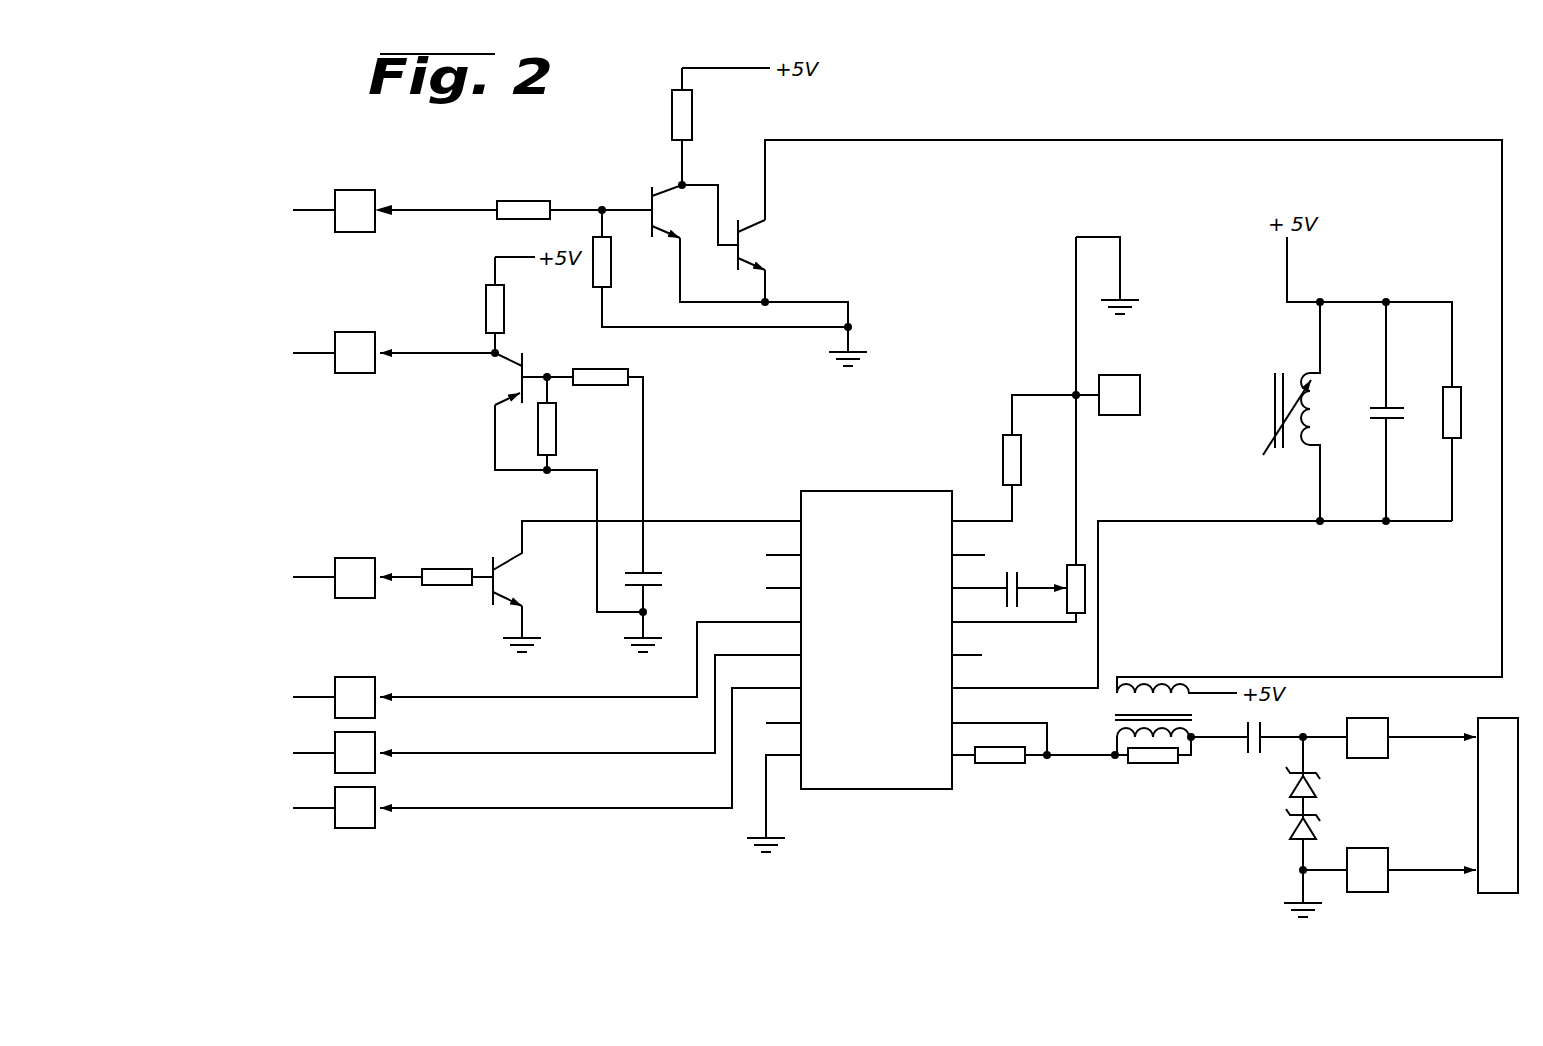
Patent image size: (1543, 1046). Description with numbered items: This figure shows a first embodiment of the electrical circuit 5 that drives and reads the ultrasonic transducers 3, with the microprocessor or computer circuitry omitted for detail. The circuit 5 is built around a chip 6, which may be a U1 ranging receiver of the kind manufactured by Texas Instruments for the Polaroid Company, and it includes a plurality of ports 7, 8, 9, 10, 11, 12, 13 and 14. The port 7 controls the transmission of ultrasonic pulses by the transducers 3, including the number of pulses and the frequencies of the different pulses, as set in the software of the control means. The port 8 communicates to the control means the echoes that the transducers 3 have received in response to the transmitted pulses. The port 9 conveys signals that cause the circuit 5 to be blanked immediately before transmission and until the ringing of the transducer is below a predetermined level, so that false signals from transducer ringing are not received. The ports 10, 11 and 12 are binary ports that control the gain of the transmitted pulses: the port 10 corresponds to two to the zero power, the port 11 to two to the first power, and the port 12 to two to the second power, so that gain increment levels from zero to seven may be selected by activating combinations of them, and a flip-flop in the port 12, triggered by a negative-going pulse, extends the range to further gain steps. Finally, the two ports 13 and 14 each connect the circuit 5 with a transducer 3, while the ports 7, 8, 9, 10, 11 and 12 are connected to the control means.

The transducer 3 is at (1512, 718).
The circuit 5 is at (1102, 98).
The chip 6 is at (925, 789).
The port 7 is at (375, 190).
The port 8 is at (375, 332).
The port 9 is at (375, 558).
The port 10 is at (375, 828).
The port 11 is at (375, 732).
The port 12 is at (375, 677).
The port 13 is at (1388, 848).
The port 14 is at (1388, 718).